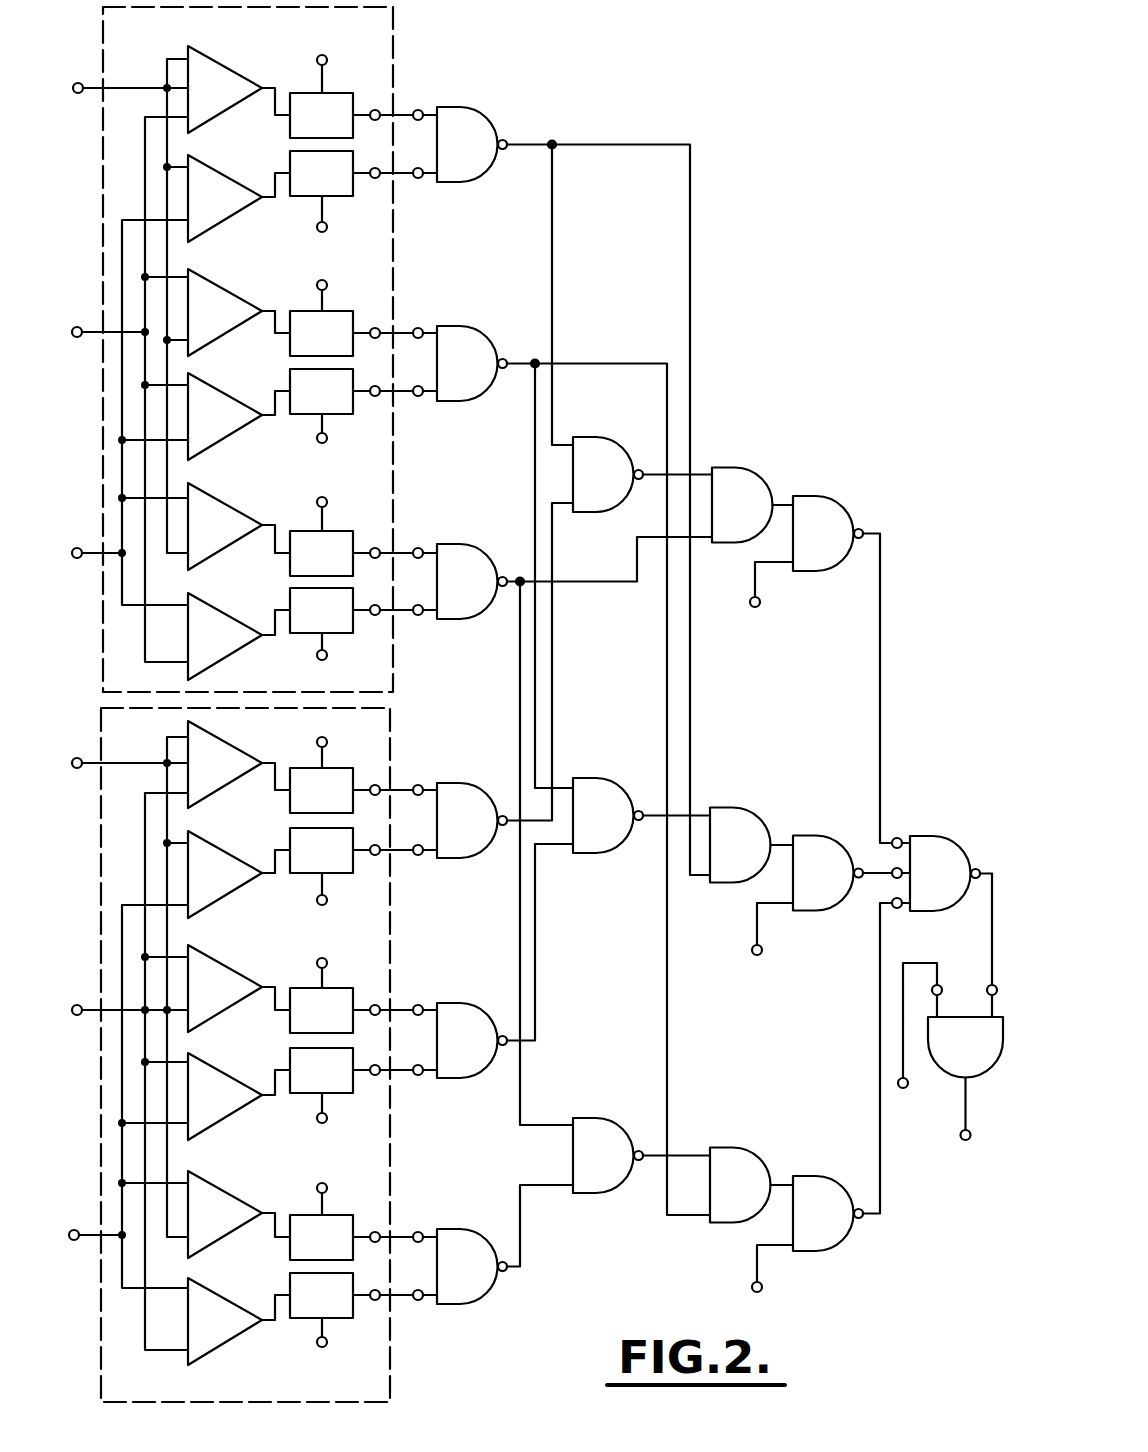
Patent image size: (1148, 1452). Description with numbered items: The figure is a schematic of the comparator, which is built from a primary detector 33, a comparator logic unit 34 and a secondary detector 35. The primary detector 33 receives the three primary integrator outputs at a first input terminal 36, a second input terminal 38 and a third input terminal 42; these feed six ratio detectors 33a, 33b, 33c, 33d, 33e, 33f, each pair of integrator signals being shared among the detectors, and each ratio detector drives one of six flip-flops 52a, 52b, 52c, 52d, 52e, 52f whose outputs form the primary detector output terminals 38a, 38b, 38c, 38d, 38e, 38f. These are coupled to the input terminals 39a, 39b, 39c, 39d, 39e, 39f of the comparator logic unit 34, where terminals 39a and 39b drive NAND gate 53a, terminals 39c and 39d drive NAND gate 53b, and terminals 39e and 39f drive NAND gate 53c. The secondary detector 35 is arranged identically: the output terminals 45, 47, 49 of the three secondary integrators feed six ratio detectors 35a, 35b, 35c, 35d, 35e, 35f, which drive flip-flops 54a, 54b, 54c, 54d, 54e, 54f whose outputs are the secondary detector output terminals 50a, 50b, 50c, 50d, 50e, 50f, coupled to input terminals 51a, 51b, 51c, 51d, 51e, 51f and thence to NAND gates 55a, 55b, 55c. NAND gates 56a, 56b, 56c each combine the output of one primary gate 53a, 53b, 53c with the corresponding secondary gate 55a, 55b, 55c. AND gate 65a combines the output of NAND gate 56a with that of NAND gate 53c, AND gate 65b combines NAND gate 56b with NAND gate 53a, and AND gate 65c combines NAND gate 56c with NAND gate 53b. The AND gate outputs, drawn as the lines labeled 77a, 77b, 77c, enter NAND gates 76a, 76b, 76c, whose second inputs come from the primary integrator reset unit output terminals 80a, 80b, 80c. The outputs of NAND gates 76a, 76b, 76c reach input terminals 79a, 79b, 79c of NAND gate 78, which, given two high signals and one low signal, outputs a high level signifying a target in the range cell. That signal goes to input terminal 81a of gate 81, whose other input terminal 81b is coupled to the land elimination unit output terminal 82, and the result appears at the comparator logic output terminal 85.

The primary detector 33 is at (363, 30).
The comparator logic unit 34 is at (760, 150).
The secondary detector 35 is at (377, 1395).
The first input terminal 36 is at (80, 83).
The second input terminal 38 is at (79, 327).
The third input terminal 42 is at (79, 548).
The output terminal of the first secondary integrator 45 is at (79, 758).
The output terminal of the second secondary integrator 47 is at (79, 1005).
The output terminal of the third secondary integrator 49 is at (76, 1230).
The ratio detector 33a is at (222, 61).
The ratio detector 33b is at (222, 159).
The ratio detector 33c is at (222, 284).
The ratio detector 33d is at (222, 377).
The ratio detector 33e is at (222, 498).
The ratio detector 33f is at (222, 597).
The flip-flop 52a is at (302, 91).
The flip-flop 52b is at (300, 196).
The flip-flop 52c is at (302, 309).
The flip-flop 52d is at (300, 414).
The flip-flop 52e is at (302, 529).
The flip-flop 52f is at (300, 633).
The primary detector output terminal 38a is at (374, 109).
The primary detector output terminal 38b is at (374, 183).
The primary detector output terminal 38c is at (374, 327).
The primary detector output terminal 38d is at (374, 401).
The primary detector output terminal 38e is at (374, 547).
The primary detector output terminal 38f is at (374, 620).
The input terminal 39a is at (419, 109).
The input terminal 39b is at (419, 179).
The input terminal 39c is at (419, 327).
The input terminal 39d is at (419, 397).
The input terminal 39e is at (419, 547).
The input terminal 39f is at (419, 616).
The NAND gate 53a is at (486, 118).
The NAND gate 53b is at (486, 337).
The NAND gate 53c is at (486, 555).
The ratio detector 35a is at (222, 736).
The ratio detector 35b is at (222, 835).
The ratio detector 35c is at (222, 960).
The ratio detector 35d is at (222, 1057).
The ratio detector 35e is at (222, 1186).
The ratio detector 35f is at (222, 1282).
The flip-flop 54a is at (304, 764).
The flip-flop 54b is at (300, 871).
The flip-flop 54c is at (302, 986).
The flip-flop 54d is at (300, 1093).
The flip-flop 54e is at (302, 1213).
The flip-flop 54f is at (300, 1318).
The secondary detector output terminal 50a is at (374, 784).
The secondary detector output terminal 50b is at (374, 859).
The secondary detector output terminal 50c is at (374, 1004).
The secondary detector output terminal 50d is at (374, 1080).
The secondary detector output terminal 50e is at (374, 1231).
The secondary detector output terminal 50f is at (374, 1305).
The input terminal 51a is at (419, 784).
The input terminal 51b is at (419, 856).
The input terminal 51c is at (419, 1004).
The input terminal 51d is at (419, 1076).
The input terminal 51e is at (419, 1231).
The input terminal 51f is at (419, 1301).
The NAND gate 55a is at (482, 793).
The NAND gate 55b is at (482, 1013).
The NAND gate 55c is at (482, 1239).
The NAND gate 56a is at (612, 443).
The NAND gate 56b is at (606, 780).
The NAND gate 56c is at (604, 1118).
The AND gate 65a is at (752, 468).
The AND gate 65b is at (725, 808).
The AND gate 65c is at (735, 1148).
The gate input line 77a is at (797, 496).
The gate input line 77b is at (797, 836).
The gate input line 77c is at (797, 1176).
The NAND gate 76a is at (864, 524).
The NAND gate 76b is at (817, 913).
The NAND gate 76c is at (844, 1244).
The output terminal of the primary integrator reset unit 80a is at (766, 598).
The output terminal of the primary integrator reset unit 80b is at (766, 943).
The output terminal of the primary integrator reset unit 80c is at (766, 1282).
The NAND gate 78 is at (950, 840).
The input terminal 79a is at (898, 837).
The input terminal 79b is at (894, 868).
The input terminal 79c is at (892, 905).
The AND gate 81 is at (985, 1075).
The input terminal 81a is at (988, 984).
The input terminal 81b is at (942, 992).
The output terminal of the land elimination unit 82 is at (901, 1103).
The output terminal of the comparator logic unit 85 is at (961, 1148).